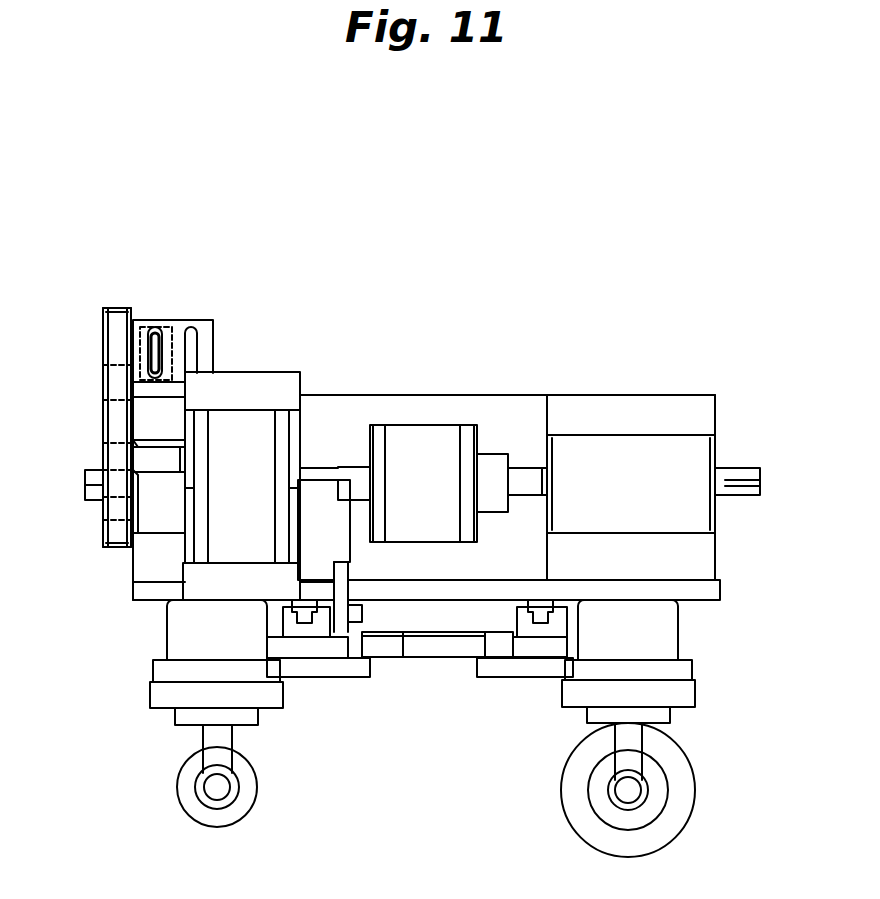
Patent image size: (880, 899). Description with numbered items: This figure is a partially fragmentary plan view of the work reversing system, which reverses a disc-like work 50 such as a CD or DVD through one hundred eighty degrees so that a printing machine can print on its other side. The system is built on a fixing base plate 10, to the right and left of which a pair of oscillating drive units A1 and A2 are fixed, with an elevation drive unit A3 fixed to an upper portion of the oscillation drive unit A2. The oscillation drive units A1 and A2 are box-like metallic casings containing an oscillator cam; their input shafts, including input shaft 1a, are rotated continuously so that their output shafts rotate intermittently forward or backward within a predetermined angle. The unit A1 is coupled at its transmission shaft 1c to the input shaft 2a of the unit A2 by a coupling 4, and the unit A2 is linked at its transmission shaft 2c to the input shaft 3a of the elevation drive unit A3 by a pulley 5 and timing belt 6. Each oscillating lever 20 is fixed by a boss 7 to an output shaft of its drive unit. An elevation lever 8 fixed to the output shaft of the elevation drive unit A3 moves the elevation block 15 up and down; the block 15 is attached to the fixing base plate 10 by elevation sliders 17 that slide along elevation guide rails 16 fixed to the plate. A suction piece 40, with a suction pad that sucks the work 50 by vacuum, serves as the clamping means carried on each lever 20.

The input shaft 1a is at (742, 477).
The transmission shaft 1c is at (528, 465).
The input shaft 2a is at (325, 475).
The transmission shaft 2c is at (95, 472).
The input shaft 3a is at (160, 453).
The coupling 4 is at (440, 455).
The pulley 5 is at (105, 528).
The timing belt 6 is at (103, 373).
The boss 7 is at (188, 625).
The elevation lever 8 is at (347, 573).
The fixing base plate 10 is at (702, 592).
The elevation block 15 is at (500, 648).
The elevation guide rail 16 is at (315, 637).
The elevation slider 17 is at (303, 625).
The oscillating lever 20 is at (285, 693).
The suction piece 40 is at (200, 750).
The work 50 is at (668, 812).
The oscillating drive unit A1 is at (612, 470).
The oscillating drive unit A2 is at (150, 557).
The elevation drive unit A3 is at (243, 440).